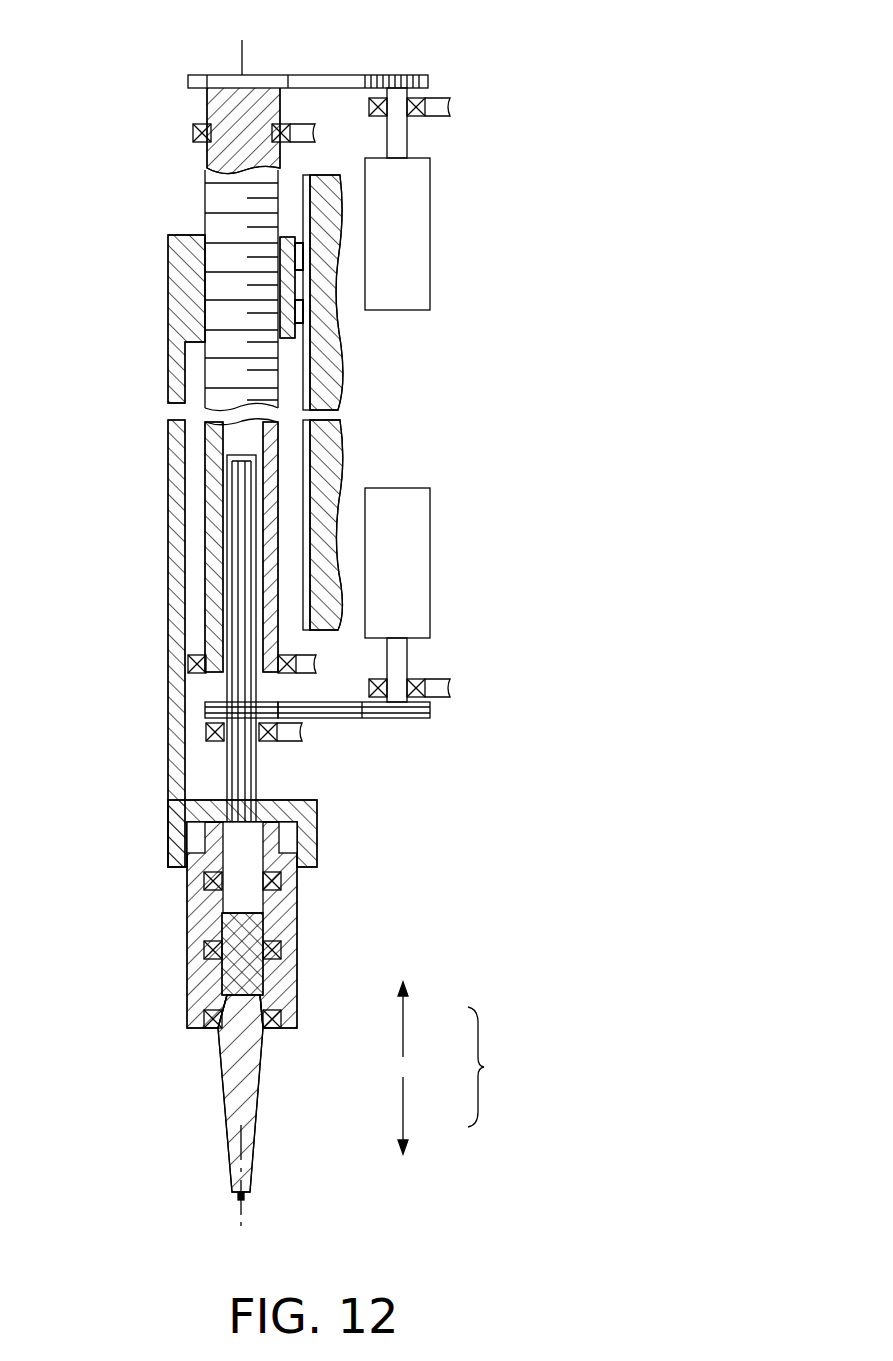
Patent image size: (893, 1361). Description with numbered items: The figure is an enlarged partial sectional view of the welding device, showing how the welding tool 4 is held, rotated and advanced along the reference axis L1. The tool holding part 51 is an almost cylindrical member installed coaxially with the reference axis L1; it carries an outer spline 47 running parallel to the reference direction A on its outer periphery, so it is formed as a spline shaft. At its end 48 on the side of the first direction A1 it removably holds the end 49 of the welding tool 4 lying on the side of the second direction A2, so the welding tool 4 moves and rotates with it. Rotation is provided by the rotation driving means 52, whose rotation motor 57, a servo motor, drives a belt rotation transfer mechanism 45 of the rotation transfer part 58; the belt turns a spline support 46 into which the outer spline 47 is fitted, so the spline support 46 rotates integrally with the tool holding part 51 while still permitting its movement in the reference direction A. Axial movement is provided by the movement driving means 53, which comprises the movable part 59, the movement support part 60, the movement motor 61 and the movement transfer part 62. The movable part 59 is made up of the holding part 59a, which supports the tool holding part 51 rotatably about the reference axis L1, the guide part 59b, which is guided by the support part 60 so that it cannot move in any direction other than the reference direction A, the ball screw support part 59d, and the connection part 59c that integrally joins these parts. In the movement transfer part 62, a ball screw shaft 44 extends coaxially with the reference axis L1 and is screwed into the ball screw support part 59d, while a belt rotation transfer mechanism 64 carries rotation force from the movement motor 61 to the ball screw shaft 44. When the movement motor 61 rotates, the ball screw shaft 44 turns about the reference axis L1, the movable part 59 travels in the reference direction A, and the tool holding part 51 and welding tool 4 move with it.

The movement driving means 53 is at (212, 46).
The belt rotation transfer mechanism 64 is at (313, 75).
The movement transfer part 62 is at (337, 68).
The ball screw shaft 44 is at (218, 105).
The ball screw support part 59d is at (205, 240).
The guide part 59b is at (180, 284).
The movement motor 61 is at (418, 257).
The movement support part 60 is at (335, 345).
The connection part 59c is at (178, 446).
The movable part 59 is at (158, 546).
The rotation motor 57 is at (418, 586).
The spline support 46 is at (210, 700).
The belt rotation transfer mechanism 45 is at (338, 702).
The rotation transfer part 58 is at (320, 732).
The rotation driving means 52 is at (270, 745).
The outer spline 47 is at (228, 776).
The holding part 59a is at (192, 896).
The tool holding part 51 is at (256, 928).
The end 48 is at (222, 975).
The end 49 is at (225, 1000).
The welding tool 4 is at (252, 1107).
The reference axis L1 is at (246, 1210).
The reference direction A is at (452, 1068).
The first direction A1 is at (403, 1117).
The second direction A2 is at (403, 1023).